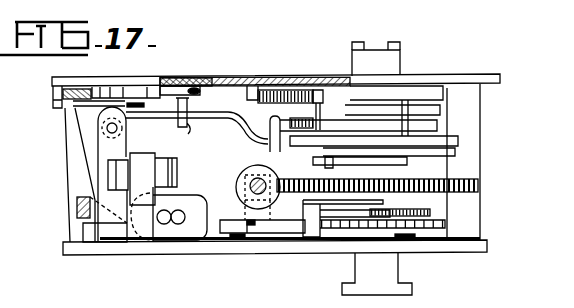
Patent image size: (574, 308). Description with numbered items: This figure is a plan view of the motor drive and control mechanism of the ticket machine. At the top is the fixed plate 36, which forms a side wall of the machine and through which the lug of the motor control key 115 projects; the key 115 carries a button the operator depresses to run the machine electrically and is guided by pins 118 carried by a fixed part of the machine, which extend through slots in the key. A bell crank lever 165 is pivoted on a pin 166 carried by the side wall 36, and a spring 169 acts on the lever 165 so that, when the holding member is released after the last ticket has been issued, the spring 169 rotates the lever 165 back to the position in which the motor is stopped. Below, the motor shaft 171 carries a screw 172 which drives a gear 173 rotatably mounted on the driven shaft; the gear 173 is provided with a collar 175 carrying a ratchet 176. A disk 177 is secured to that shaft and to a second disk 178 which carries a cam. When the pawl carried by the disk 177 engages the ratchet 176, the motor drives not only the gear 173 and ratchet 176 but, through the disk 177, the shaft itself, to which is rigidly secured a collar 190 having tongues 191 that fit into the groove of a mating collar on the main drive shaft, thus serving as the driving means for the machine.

The plate 36 is at (288, 81).
The motor control key 115 is at (211, 88).
The pins 118 is at (154, 151).
The bell crank lever 165 is at (137, 97).
The pin 166 is at (139, 84).
The spring 169 is at (66, 108).
The shaft 171 is at (251, 185).
The screw 172 is at (251, 169).
The gear 173 is at (477, 181).
The collar 175 is at (393, 170).
The ratchet 176 is at (350, 163).
The disk 177 is at (453, 138).
The disk 178 is at (427, 133).
The collar 190 is at (378, 62).
The tongues 191 is at (362, 42).